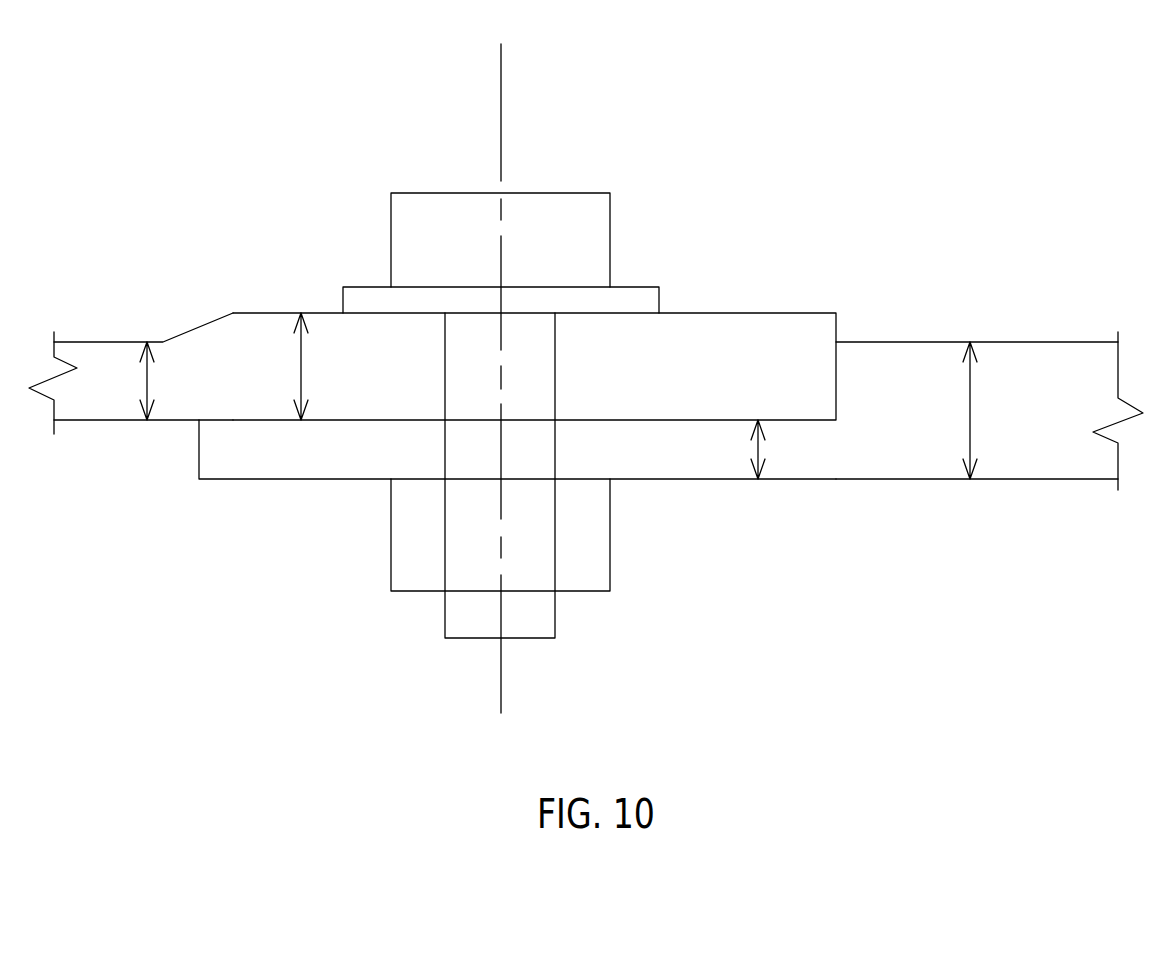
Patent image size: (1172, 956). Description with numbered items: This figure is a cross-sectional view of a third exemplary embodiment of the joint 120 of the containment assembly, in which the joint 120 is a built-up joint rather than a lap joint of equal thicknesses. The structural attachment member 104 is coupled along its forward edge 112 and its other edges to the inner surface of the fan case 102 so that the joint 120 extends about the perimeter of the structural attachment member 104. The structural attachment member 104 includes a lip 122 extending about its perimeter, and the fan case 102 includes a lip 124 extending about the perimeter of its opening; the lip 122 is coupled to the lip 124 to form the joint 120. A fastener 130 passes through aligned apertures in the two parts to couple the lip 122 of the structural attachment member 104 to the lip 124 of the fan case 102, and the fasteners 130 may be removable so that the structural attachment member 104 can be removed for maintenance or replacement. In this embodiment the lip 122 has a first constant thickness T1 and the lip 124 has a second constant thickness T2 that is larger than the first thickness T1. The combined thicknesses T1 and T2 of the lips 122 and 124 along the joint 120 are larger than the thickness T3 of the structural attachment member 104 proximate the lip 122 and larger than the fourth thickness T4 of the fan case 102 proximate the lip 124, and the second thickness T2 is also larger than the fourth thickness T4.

The fan case 102 is at (116, 402).
The structural attachment member 104 is at (1058, 355).
The forward edge 112 is at (742, 585).
The joint 120 is at (891, 99).
The lip 122 is at (300, 468).
The lip 124 is at (726, 329).
The fastener 130 is at (563, 213).
The first constant thickness T1 is at (759, 450).
The second constant thickness T2 is at (300, 342).
The thickness T3 is at (971, 437).
The fourth thickness T4 is at (143, 369).